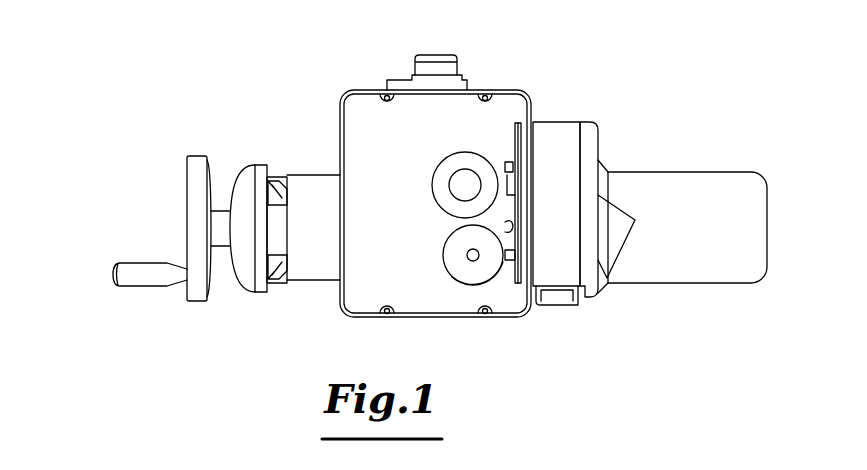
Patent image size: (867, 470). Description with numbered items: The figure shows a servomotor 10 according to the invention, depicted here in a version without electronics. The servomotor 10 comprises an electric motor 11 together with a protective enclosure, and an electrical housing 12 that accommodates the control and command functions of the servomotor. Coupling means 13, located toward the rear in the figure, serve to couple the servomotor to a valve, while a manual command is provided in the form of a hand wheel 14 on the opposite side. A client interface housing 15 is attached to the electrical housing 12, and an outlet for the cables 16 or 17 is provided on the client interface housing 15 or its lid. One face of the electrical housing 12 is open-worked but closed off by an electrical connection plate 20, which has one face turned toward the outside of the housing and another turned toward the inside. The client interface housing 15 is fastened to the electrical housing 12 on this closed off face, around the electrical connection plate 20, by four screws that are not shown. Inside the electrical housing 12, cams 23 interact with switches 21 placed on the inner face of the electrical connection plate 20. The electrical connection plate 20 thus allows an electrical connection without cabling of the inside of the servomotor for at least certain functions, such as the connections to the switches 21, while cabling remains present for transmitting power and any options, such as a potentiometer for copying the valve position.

The servomotor 10 is at (290, 83).
The electric motor 11 is at (684, 190).
The electrical housing 12 is at (503, 93).
The coupling means 13 is at (513, 331).
The hand wheel 14 is at (232, 315).
The client interface housing 15 is at (555, 128).
The outlet for the cables 16 is at (556, 299).
The outlet for the cables 17 is at (622, 247).
The electrical connection plate 20 is at (513, 135).
The switches 21 is at (505, 163).
The cams 23 is at (442, 183).